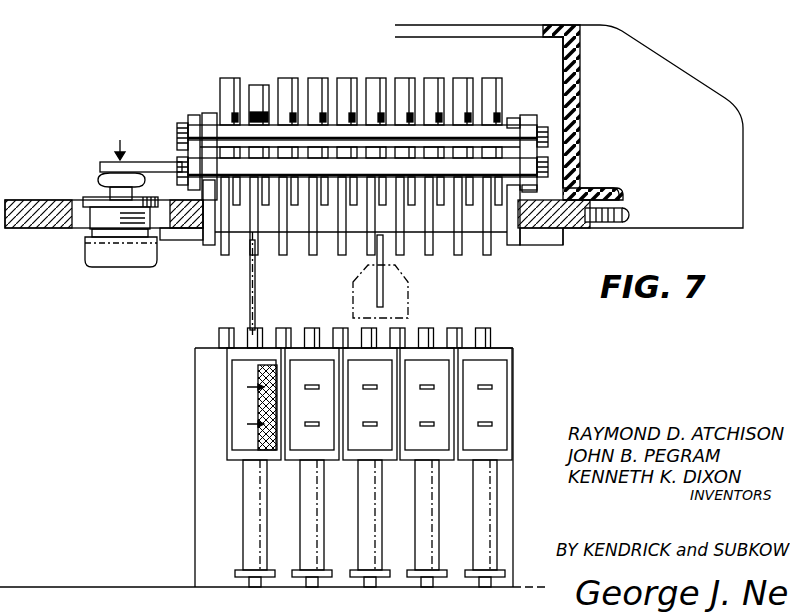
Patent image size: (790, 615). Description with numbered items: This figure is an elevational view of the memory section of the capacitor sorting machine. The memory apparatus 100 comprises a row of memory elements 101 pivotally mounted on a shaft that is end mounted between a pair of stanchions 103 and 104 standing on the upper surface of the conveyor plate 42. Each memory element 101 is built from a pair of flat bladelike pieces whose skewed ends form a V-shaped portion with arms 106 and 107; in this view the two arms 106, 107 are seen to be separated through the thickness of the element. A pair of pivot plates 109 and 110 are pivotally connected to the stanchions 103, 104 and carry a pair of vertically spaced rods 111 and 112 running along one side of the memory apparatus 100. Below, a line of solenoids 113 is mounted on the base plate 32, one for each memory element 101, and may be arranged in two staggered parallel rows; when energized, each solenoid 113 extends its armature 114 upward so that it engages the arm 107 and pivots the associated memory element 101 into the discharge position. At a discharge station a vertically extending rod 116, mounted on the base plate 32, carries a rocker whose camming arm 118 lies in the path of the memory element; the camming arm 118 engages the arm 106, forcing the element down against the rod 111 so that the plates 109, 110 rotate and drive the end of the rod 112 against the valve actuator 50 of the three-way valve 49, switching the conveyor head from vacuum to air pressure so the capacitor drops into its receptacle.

The base plate 32 is at (160, 586).
The conveyor plate 42 is at (50, 226).
The three-way valve 49 is at (120, 262).
The valve actuator 50 is at (100, 182).
The memory apparatus 100 is at (219, 58).
The memory element 101 is at (346, 76).
The stanchion 103 is at (516, 222).
The stanchion 104 is at (214, 214).
The arm 106 is at (262, 257).
The arm 107 is at (487, 254).
The pivot plate 109 is at (195, 114).
The pivot plate 110 is at (530, 127).
The rod 111 is at (485, 135).
The rod 112 is at (505, 167).
The solenoid 113 is at (242, 393).
The armature 114 is at (250, 296).
The rod 116 is at (410, 304).
The camming arm 118 is at (376, 243).